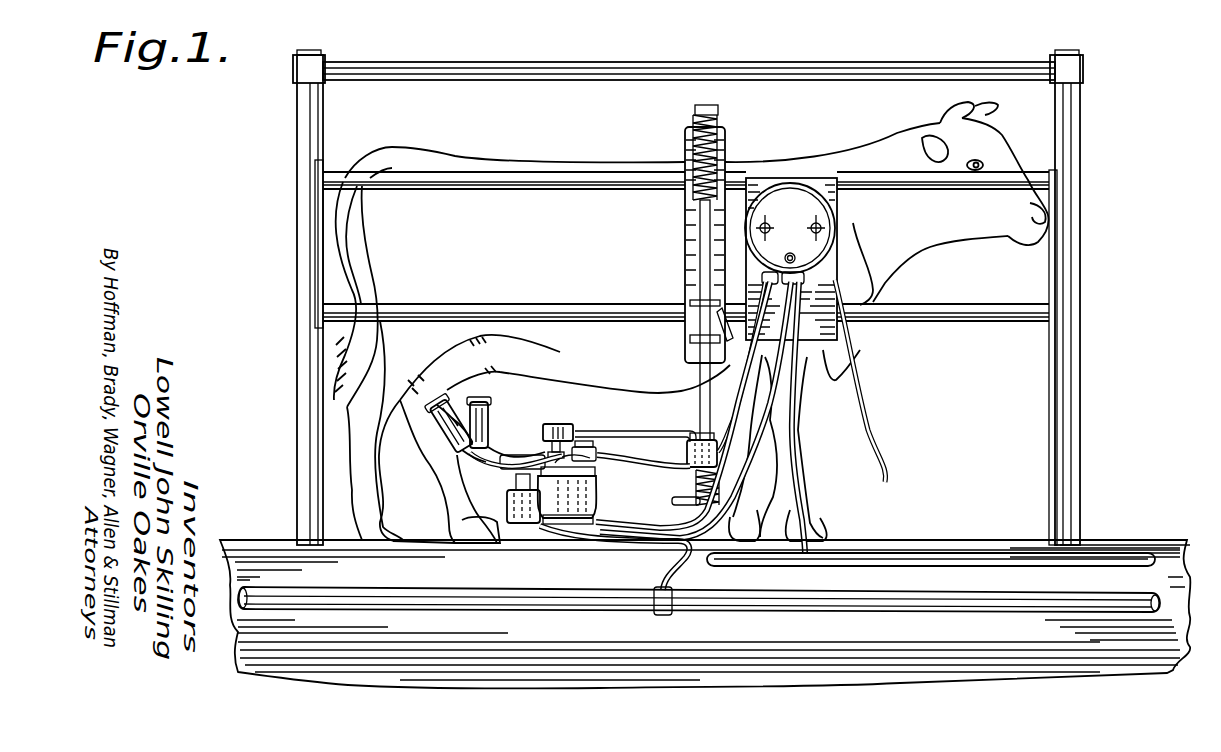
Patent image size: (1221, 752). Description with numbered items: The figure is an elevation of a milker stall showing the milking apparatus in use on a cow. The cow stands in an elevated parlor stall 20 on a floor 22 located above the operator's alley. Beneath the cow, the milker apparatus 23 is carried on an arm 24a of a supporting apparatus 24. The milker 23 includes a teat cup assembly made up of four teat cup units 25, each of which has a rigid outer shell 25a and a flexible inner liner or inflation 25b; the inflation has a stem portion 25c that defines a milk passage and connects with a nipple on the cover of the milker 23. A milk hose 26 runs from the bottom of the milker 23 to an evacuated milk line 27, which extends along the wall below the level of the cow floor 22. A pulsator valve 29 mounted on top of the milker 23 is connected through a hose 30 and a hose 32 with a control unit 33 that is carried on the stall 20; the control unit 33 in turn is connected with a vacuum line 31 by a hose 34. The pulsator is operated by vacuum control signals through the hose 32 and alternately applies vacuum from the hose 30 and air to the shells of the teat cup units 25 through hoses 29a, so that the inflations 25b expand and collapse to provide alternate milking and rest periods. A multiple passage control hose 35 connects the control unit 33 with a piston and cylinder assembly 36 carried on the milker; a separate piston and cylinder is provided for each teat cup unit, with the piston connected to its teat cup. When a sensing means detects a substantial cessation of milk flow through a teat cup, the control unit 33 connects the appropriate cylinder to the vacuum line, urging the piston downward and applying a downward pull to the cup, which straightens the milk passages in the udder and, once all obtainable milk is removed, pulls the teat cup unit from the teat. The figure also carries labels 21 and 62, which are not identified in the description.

The parlor stall 20 is at (1130, 121).
The floor trough 21 is at (1185, 647).
The floor 22 is at (1127, 534).
The milker apparatus 23 is at (605, 500).
The supporting apparatus 24 is at (694, 397).
The arm 24a is at (598, 431).
The teat cup unit 25 is at (501, 414).
The rigid outer shell 25a is at (448, 436).
The flexible inner liner or inflation 25b is at (440, 408).
The stem portion 25c is at (480, 464).
The milk hose 26 is at (645, 548).
The evacuated milk line 27 is at (790, 609).
The pulsator valve 29 is at (600, 454).
The hoses 29a is at (494, 452).
The hose 30 is at (749, 388).
The vacuum line 31 is at (1021, 562).
The hose 32 is at (730, 404).
The control unit 33 is at (846, 225).
The hose 34 is at (793, 452).
The multiple passage control hose 35 is at (768, 424).
The piston and cylinder assembly 36 is at (502, 511).
The valve 62 is at (565, 426).